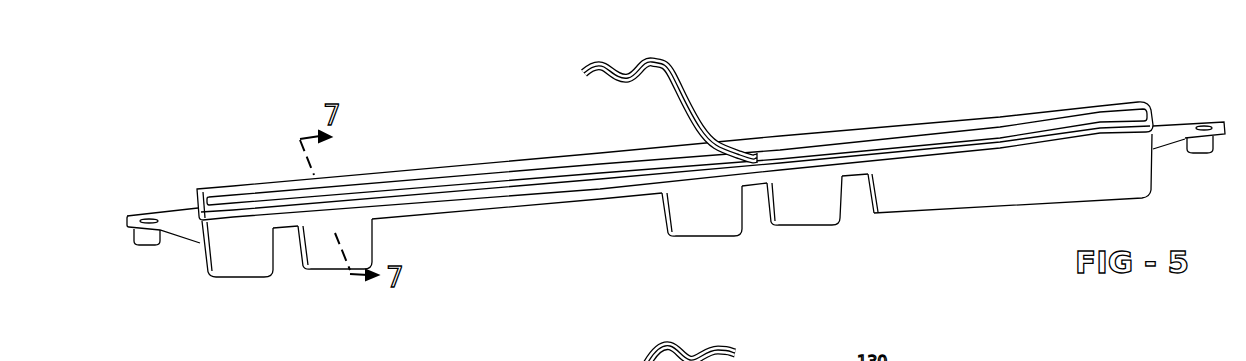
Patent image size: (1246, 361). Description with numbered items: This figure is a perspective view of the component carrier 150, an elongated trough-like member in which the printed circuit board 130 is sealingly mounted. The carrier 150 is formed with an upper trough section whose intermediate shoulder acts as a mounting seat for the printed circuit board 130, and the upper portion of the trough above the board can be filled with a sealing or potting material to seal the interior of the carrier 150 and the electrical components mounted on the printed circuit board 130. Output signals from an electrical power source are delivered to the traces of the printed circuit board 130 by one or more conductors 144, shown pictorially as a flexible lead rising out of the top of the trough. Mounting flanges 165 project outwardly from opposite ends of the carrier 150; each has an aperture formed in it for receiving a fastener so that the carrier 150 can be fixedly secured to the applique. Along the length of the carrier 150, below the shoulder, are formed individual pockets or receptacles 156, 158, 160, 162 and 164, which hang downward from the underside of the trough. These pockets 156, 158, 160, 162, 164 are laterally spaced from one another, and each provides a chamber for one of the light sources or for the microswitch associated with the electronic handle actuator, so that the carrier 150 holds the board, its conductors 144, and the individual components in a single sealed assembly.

The printed circuit board 130 is at (505, 177).
The conductors 144 is at (693, 107).
The carrier 150 is at (440, 160).
The pocket 156 is at (241, 272).
The pocket 158 is at (326, 262).
The pocket 160 is at (708, 233).
The pocket 162 is at (830, 215).
The pocket 164 is at (967, 212).
The mounting flanges 165 is at (181, 237).